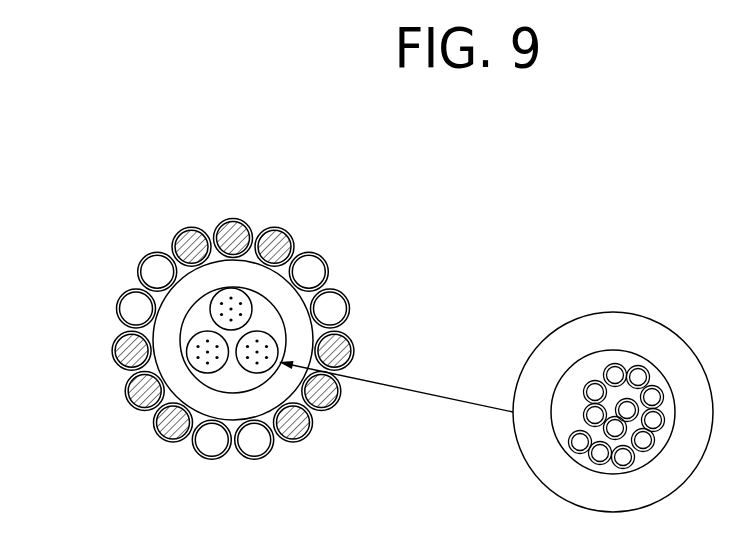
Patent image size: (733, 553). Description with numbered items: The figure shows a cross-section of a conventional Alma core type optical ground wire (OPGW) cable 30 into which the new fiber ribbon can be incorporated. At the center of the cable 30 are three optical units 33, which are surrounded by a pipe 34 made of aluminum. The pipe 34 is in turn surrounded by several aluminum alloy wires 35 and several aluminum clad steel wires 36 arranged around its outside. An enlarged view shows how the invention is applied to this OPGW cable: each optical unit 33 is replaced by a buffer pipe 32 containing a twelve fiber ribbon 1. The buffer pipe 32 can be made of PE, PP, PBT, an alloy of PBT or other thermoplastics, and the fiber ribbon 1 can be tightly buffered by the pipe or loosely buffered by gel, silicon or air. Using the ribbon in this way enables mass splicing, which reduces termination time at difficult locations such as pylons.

The fiber ribbon 1 is at (628, 440).
The Alma core type OPGW cable 30 is at (100, 292).
The buffer pipe 32 is at (635, 330).
The optical unit 33 is at (240, 297).
The pipe 34 is at (253, 273).
The aluminum alloy wire 35 is at (307, 267).
The aluminum clad steel wire 36 is at (337, 352).